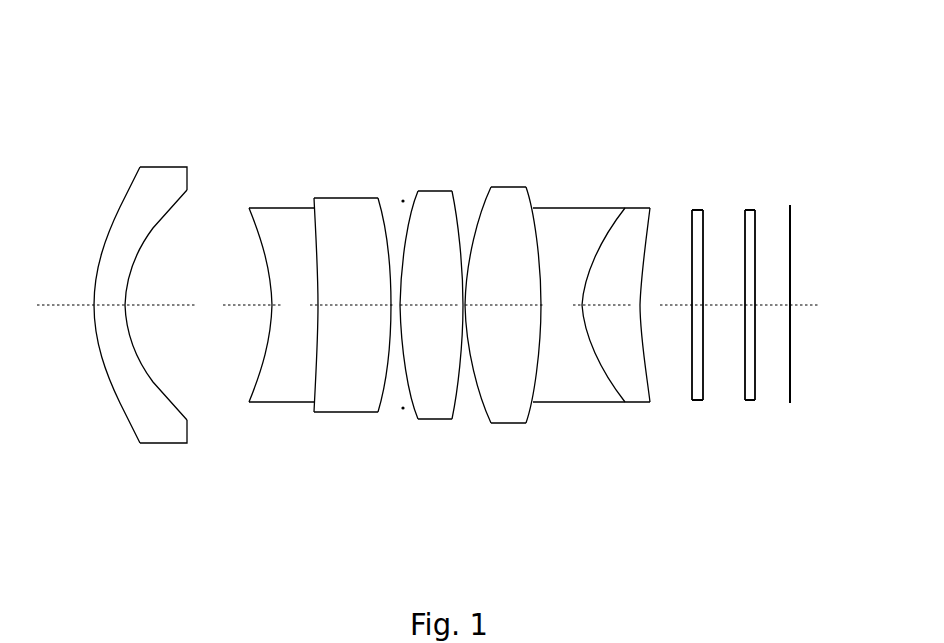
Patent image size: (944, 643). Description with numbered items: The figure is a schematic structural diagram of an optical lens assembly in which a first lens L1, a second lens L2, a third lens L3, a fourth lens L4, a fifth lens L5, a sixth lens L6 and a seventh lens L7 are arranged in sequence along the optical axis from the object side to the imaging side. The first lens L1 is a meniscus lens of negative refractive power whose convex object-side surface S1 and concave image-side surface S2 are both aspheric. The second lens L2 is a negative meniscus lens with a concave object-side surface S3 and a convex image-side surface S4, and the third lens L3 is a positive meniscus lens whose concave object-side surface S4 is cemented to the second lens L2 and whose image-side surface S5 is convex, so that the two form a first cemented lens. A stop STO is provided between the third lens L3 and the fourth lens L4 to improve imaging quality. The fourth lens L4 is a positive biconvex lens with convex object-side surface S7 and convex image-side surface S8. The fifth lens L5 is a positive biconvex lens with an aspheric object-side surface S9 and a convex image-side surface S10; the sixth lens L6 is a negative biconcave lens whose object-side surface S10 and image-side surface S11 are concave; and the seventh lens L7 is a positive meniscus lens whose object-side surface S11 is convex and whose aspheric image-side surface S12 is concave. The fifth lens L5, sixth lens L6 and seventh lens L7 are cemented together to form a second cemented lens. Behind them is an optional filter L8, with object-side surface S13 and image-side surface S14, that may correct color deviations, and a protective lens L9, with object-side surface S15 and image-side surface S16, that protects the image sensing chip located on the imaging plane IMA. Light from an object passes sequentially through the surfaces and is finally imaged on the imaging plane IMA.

The first lens L1 is at (104, 301).
The second lens L2 is at (217, 301).
The third lens L3 is at (292, 301).
The fourth lens L4 is at (400, 301).
The fifth lens L5 is at (480, 301).
The sixth lens L6 is at (563, 301).
The seventh lens L7 is at (608, 301).
The filter L8 is at (675, 301).
The protective lens L9 is at (788, 301).
The object-side surface of the first lens S1 is at (124, 210).
The image-side surface of the first lens S2 is at (153, 228).
The object-side surface of the second lens S3 is at (252, 228).
The cemented surface of the second and third lenses S4 is at (316, 250).
The image-side surface of the third lens S5 is at (388, 268).
The stop STO is at (403, 201).
The object-side surface of the fourth lens S7 is at (415, 192).
The image-side surface of the fourth lens S8 is at (457, 255).
The object-side surface of the fifth lens S9 is at (475, 233).
The cemented surface of the fifth and sixth lenses S10 is at (536, 228).
The cemented surface of the sixth and seventh lenses S11 is at (590, 257).
The image-side surface of the seventh lens S12 is at (640, 258).
The object-side surface of the filter S13 is at (688, 250).
The image-side surface of the filter S14 is at (700, 209).
The object-side surface of the protective lens S15 is at (745, 209).
The image-side surface of the protective lens S16 is at (757, 272).
The imaging plane IMA is at (792, 245).